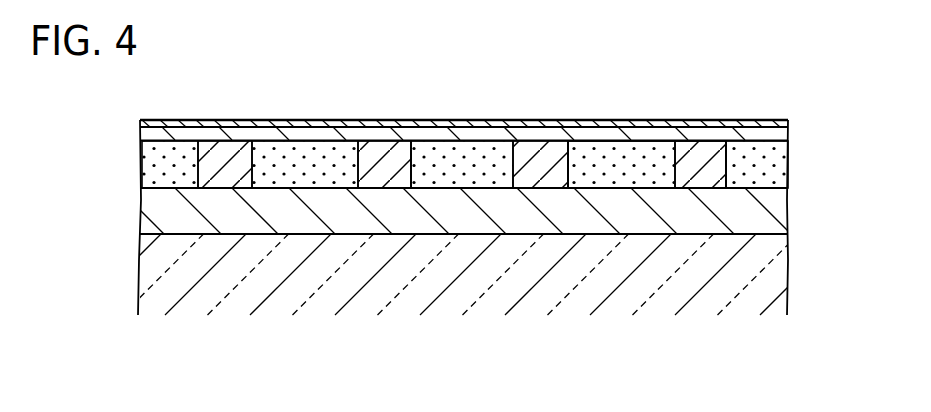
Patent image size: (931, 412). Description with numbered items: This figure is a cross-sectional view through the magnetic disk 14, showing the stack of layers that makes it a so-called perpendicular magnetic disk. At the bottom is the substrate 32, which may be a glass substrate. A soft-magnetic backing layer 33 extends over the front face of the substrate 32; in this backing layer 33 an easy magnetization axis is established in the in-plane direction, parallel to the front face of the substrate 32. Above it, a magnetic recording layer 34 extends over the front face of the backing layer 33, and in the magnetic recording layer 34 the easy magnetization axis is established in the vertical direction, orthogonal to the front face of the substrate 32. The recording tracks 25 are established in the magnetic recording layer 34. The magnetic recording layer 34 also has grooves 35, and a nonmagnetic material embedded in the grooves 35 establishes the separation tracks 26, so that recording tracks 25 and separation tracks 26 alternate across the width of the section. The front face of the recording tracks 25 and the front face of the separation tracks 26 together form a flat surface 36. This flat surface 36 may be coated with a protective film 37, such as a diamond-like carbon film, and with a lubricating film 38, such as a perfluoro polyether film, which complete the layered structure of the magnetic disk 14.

The magnetic disk 14 is at (783, 74).
The recording tracks 25 is at (303, 143).
The separation tracks 26 is at (220, 143).
The substrate 32 is at (787, 262).
The soft-magnetic backing layer 33 is at (787, 212).
The magnetic recording layer 34 is at (700, 74).
The grooves 35 is at (406, 150).
The flat surface 36 is at (765, 121).
The protective film 37 is at (787, 134).
The lubricating film 38 is at (787, 125).